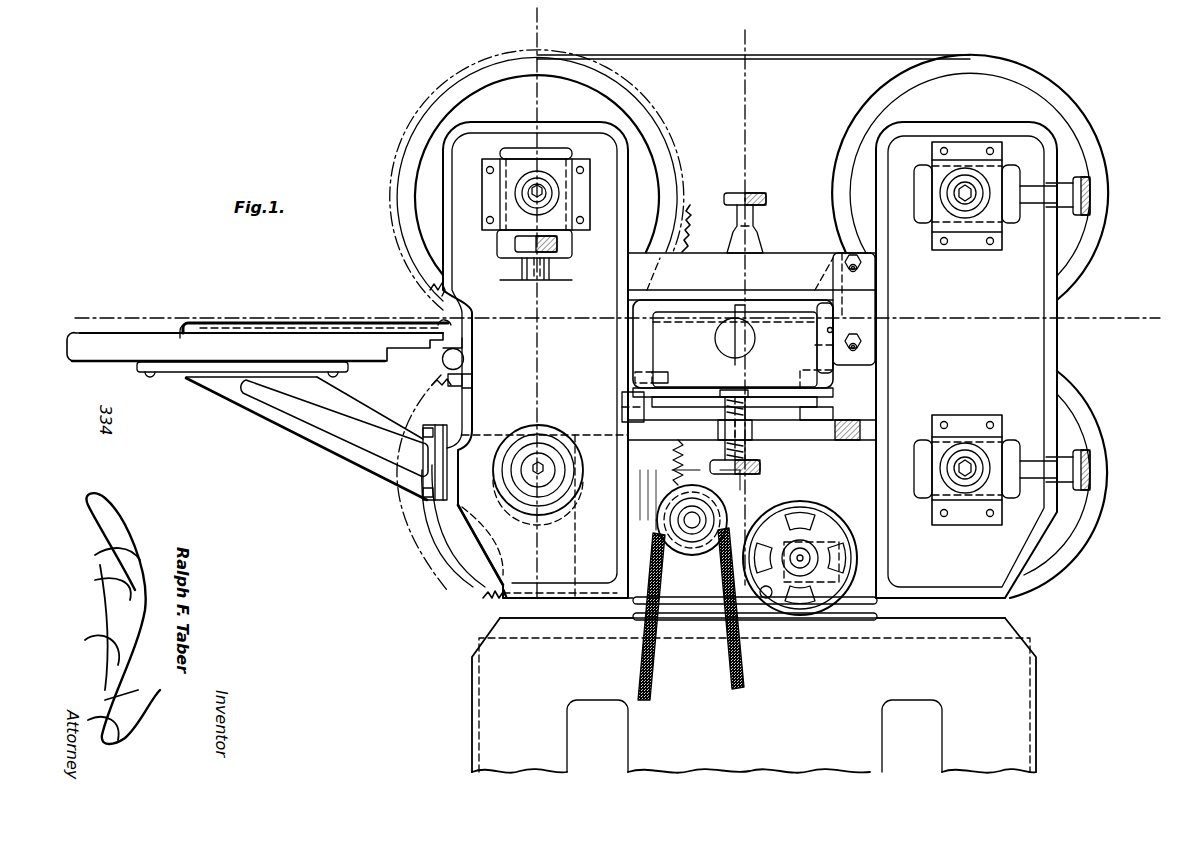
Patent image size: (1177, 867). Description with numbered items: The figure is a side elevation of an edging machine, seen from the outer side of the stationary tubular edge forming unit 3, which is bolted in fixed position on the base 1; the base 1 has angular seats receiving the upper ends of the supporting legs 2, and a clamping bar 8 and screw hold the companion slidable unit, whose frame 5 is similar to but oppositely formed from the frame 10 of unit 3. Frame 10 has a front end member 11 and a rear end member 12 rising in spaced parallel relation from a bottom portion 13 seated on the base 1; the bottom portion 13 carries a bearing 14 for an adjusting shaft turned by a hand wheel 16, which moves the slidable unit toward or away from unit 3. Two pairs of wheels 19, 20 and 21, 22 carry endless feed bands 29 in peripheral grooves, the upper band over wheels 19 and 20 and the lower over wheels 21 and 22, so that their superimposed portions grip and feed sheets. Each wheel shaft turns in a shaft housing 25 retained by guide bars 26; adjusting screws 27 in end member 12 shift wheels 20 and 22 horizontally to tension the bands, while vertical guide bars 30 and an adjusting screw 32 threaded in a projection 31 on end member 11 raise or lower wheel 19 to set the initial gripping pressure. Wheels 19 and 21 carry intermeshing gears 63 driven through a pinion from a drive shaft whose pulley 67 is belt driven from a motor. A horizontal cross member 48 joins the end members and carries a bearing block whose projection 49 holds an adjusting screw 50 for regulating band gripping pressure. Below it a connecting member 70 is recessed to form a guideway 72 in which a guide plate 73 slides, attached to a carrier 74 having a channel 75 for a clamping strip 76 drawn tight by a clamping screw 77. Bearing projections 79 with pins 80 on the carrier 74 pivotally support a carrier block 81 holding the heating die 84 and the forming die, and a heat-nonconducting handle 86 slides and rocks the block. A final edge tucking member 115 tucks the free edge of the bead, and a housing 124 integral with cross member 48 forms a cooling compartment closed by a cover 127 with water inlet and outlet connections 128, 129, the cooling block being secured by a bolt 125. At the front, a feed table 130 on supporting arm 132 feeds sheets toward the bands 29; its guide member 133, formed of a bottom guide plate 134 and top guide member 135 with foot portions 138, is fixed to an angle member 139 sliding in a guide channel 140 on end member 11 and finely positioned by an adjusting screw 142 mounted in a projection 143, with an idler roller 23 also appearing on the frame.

The base 1 is at (1000, 610).
The supporting legs 2 is at (1030, 660).
The tubular edge forming unit 3 is at (90, 324).
The frame 5 is at (738, 44).
The clamping bar 8 is at (532, 22).
The frame 10 is at (431, 184).
The end member 11 is at (455, 508).
The end member 12 is at (1032, 388).
The bottom portion 13 is at (862, 598).
The bearing 14 is at (812, 600).
The hand wheel 16 is at (785, 605).
The wheel 19 is at (450, 110).
The wheel 20 is at (1066, 112).
The wheel 21 is at (452, 505).
The wheel 22 is at (1055, 560).
The idler wheel 23 is at (548, 460).
The shaft housing 25 is at (525, 212).
The guide bars 26 is at (970, 148).
The adjusting screw 27 is at (1085, 185).
The endless feed bands 29 is at (845, 58).
The guide bars 30 is at (478, 232).
The projection 31 is at (522, 280).
The adjusting screw 32 is at (515, 244).
The cross member 48 is at (780, 258).
The projection 49 is at (760, 228).
The adjusting screw 50 is at (750, 193).
The gears 63 is at (672, 248).
The pulley 67 is at (660, 512).
The connecting member 70 is at (805, 420).
The guideway 72 is at (816, 428).
The guide plate 73 is at (755, 440).
The carrier 74 is at (777, 400).
The channel 75 is at (729, 408).
The clamping strip 76 is at (740, 390).
The clamping screw 77 is at (733, 474).
The bearing projections 79 is at (628, 395).
The bearing pins 80 is at (670, 372).
The carrier block 81 is at (680, 312).
The heating die 84 is at (668, 318).
The handle 86 is at (755, 340).
The final edge tucking member 115 is at (822, 316).
The housing 124 is at (822, 352).
The bolt 125 is at (836, 330).
The cover 127 is at (870, 312).
The water inlet connection 128 is at (862, 268).
The water outlet connection 129 is at (862, 347).
The feed table 130 is at (190, 360).
The supporting arm 132 is at (280, 412).
The guide member 133 is at (258, 324).
The bottom guide plate 134 is at (190, 328).
The top guide member 135 is at (312, 326).
The foot portions 138 is at (404, 328).
The angle member 139 is at (430, 382).
The guide channel 140 is at (470, 384).
The adjusting screw 142 is at (465, 361).
The projection 143 is at (466, 348).